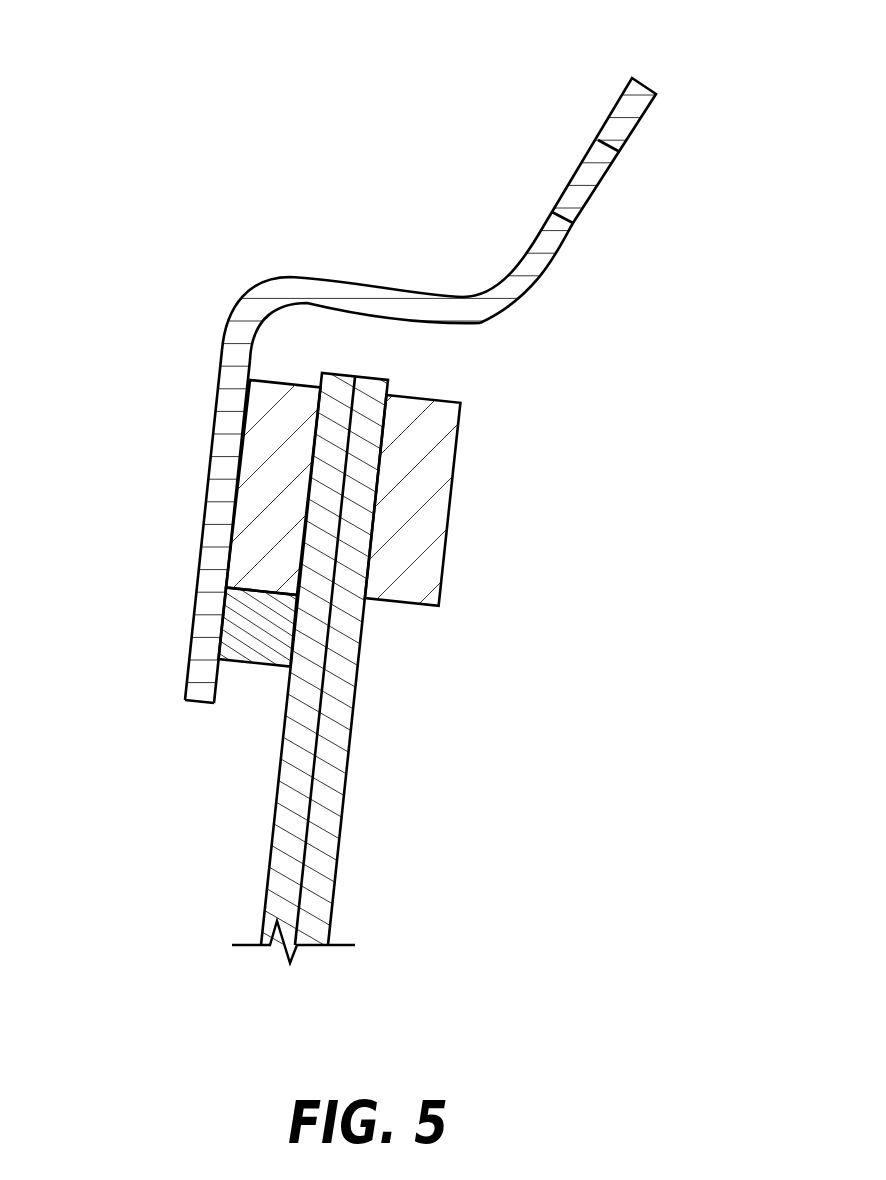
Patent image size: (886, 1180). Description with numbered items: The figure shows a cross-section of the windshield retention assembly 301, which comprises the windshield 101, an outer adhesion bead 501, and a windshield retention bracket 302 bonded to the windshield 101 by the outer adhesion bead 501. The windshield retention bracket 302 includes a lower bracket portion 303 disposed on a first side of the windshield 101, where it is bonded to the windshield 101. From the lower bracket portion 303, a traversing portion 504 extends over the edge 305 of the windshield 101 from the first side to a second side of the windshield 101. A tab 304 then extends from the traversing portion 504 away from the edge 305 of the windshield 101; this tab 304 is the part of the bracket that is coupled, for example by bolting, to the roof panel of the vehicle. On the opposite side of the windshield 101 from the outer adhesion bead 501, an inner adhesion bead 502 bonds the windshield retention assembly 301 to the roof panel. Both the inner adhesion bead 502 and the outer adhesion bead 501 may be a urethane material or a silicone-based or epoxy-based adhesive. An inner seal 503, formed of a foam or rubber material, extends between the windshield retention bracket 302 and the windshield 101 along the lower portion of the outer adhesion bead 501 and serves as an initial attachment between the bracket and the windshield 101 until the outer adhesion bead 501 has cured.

The windshield 101 is at (332, 899).
The windshield retention assembly 301 is at (185, 142).
The windshield retention bracket 302 is at (238, 345).
The lower bracket portion 303 is at (172, 622).
The tab 304 is at (620, 152).
The edge 305 is at (370, 375).
The outer adhesion bead 501 is at (263, 507).
The inner adhesion bead 502 is at (435, 503).
The inner seal 503 is at (248, 665).
The traversing portion 504 is at (402, 290).